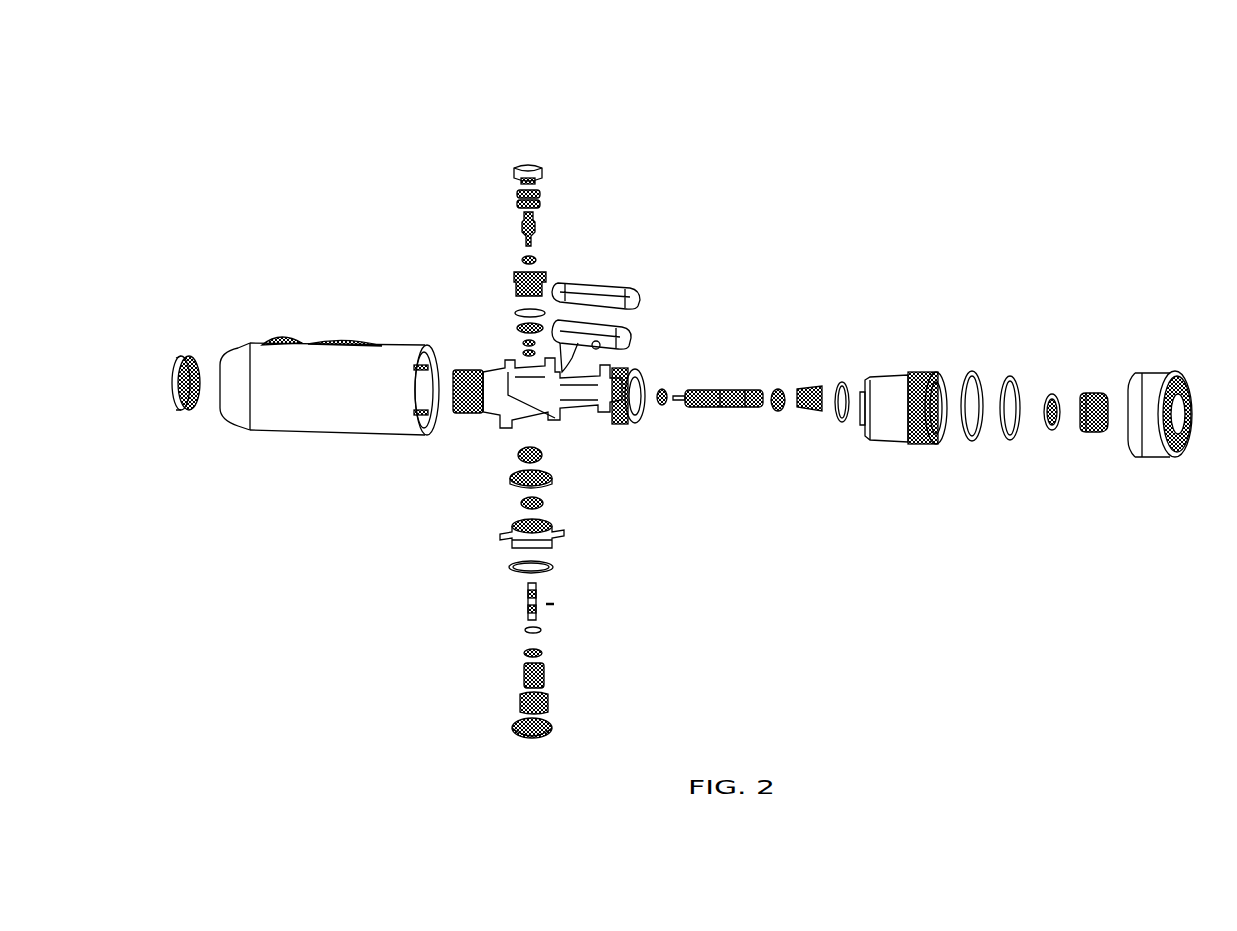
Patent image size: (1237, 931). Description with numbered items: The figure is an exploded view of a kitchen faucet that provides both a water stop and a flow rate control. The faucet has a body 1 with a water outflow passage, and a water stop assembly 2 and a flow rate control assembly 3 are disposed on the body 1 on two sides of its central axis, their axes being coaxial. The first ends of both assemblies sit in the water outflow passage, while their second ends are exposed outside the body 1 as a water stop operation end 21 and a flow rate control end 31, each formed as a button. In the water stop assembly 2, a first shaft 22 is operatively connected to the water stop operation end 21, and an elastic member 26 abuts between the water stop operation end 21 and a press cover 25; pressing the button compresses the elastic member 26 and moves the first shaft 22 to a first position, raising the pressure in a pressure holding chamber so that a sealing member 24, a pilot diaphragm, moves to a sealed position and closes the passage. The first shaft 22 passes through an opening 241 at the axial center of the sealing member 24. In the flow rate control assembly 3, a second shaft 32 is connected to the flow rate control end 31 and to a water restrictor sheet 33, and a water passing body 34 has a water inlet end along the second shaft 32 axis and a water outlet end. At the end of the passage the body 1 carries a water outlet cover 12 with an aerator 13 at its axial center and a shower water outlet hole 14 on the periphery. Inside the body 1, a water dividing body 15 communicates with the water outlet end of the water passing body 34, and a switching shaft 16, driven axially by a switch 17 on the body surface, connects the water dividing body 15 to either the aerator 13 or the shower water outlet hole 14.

The body 1 is at (290, 418).
The water stop assembly 2 is at (499, 634).
The flow rate control assembly 3 is at (422, 202).
The water outlet cover 12 is at (1150, 445).
The aerator 13 is at (1085, 433).
The shower water outlet hole 14 is at (1185, 383).
The water dividing body 15 is at (888, 400).
The switching shaft 16 is at (710, 405).
The switch 17 is at (600, 284).
The water stop operation end 21 is at (511, 769).
The first shaft 22 is at (530, 605).
The sealing member 24 is at (518, 483).
The press cover 25 is at (512, 540).
The elastic member 26 is at (545, 678).
The flow rate control end 31 is at (520, 168).
The second shaft 32 is at (518, 223).
The water restrictor sheet 33 is at (480, 310).
The water passing body 34 is at (520, 283).
The opening 241 is at (540, 472).